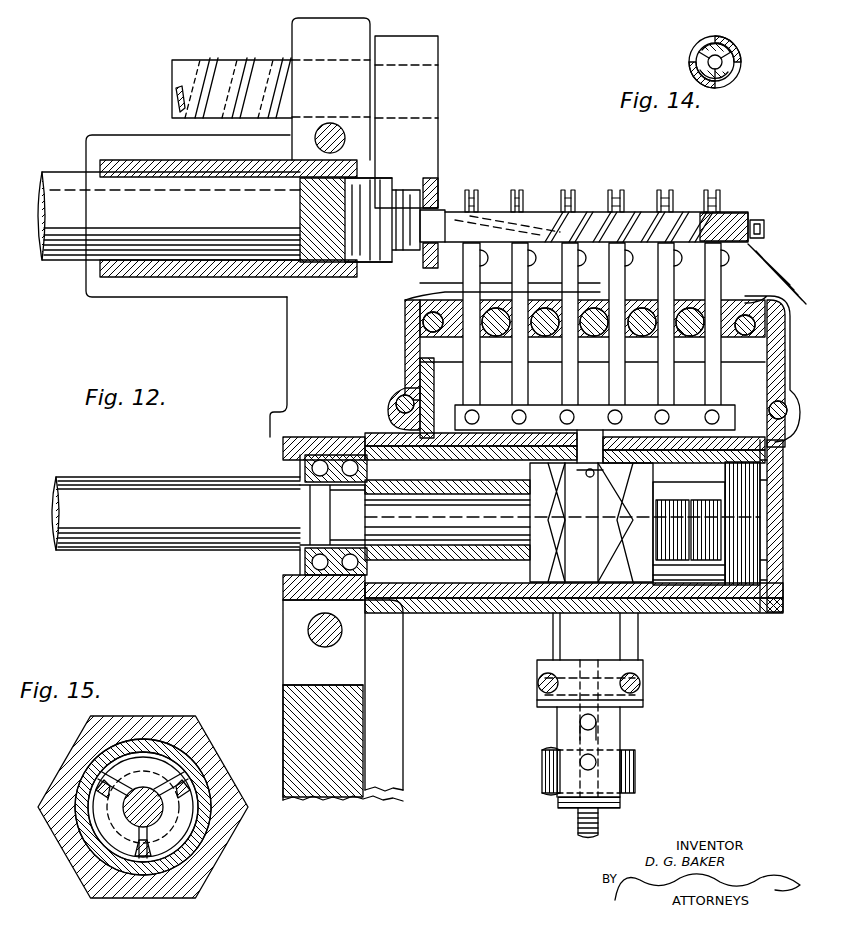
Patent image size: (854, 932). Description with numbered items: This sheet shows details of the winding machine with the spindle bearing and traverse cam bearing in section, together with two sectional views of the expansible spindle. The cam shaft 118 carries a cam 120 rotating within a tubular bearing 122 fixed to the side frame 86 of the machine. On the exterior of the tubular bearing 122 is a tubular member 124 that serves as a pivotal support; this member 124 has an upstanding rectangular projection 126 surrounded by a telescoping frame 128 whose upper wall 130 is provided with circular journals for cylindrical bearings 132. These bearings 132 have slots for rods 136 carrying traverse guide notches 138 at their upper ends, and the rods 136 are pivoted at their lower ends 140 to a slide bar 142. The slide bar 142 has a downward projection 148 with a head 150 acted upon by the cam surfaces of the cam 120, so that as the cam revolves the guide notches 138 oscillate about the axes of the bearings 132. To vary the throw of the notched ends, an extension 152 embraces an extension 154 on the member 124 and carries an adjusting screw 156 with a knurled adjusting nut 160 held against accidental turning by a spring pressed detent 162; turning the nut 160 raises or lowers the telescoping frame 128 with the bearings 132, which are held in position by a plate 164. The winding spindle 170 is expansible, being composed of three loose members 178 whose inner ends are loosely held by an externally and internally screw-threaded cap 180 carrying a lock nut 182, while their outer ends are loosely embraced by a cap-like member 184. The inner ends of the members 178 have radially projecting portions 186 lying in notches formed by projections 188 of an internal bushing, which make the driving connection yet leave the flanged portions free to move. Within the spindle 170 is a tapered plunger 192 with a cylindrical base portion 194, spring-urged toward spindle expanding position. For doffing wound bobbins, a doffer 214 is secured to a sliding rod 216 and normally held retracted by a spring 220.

In FIG. 12, the side frame 86 is at (325, 797).
In FIG. 12, the cam shaft 118 is at (180, 484).
In FIG. 12, the cam 120 is at (538, 517).
In FIG. 12, the tubular bearing 122 is at (492, 592).
In FIG. 12, the tubular member 124 is at (465, 438).
In FIG. 12, the upstanding rectangular projection 126 is at (425, 390).
In FIG. 12, the telescoping frame 128 is at (410, 345).
In FIG. 12, the wall 130 is at (500, 340).
In FIG. 12, the cylindrical bearings 132 is at (680, 290).
In FIG. 12, the rods 136 is at (430, 290).
In FIG. 12, the traverse guide notches 138 is at (478, 193).
In FIG. 12, the lower ends 140 is at (465, 418).
In FIG. 12, the slide bar 142 is at (540, 405).
In FIG. 12, the downward projection 148 is at (600, 445).
In FIG. 12, the head 150 is at (603, 470).
In FIG. 12, the extension 152 is at (630, 645).
In FIG. 12, the extension 154 is at (570, 628).
In FIG. 12, the adjusting screw 156 is at (578, 829).
In FIG. 12, the knurled adjusting nut 160 is at (640, 772).
In FIG. 12, the spring pressed detent 162 is at (542, 760).
In FIG. 12, the plate 164 is at (415, 318).
In FIG. 12, the winding spindle 170 is at (445, 205).
In FIG. 14, the loose members 178 is at (722, 45).
In FIG. 15, the screw-threaded cap 180 is at (198, 790).
In FIG. 12, the lock nut 182 is at (400, 180).
In FIG. 15, the lock nut 182 is at (200, 750).
In FIG. 12, the cap-like member 184 is at (758, 222).
In FIG. 14, the cap-like member 184 is at (742, 76).
In FIG. 15, the radially projecting portions 186 is at (148, 765).
In FIG. 15, the projections 188 is at (132, 765).
In FIG. 12, the tapered plunger 192 is at (537, 11).
In FIG. 15, the tapered plunger 192 is at (70, 835).
In FIG. 12, the cylindrical base portion 194 is at (300, 218).
In FIG. 12, the doffer 214 is at (438, 100).
In FIG. 12, the sliding rod 216 is at (172, 72).
In FIG. 12, the spring 220 is at (230, 60).